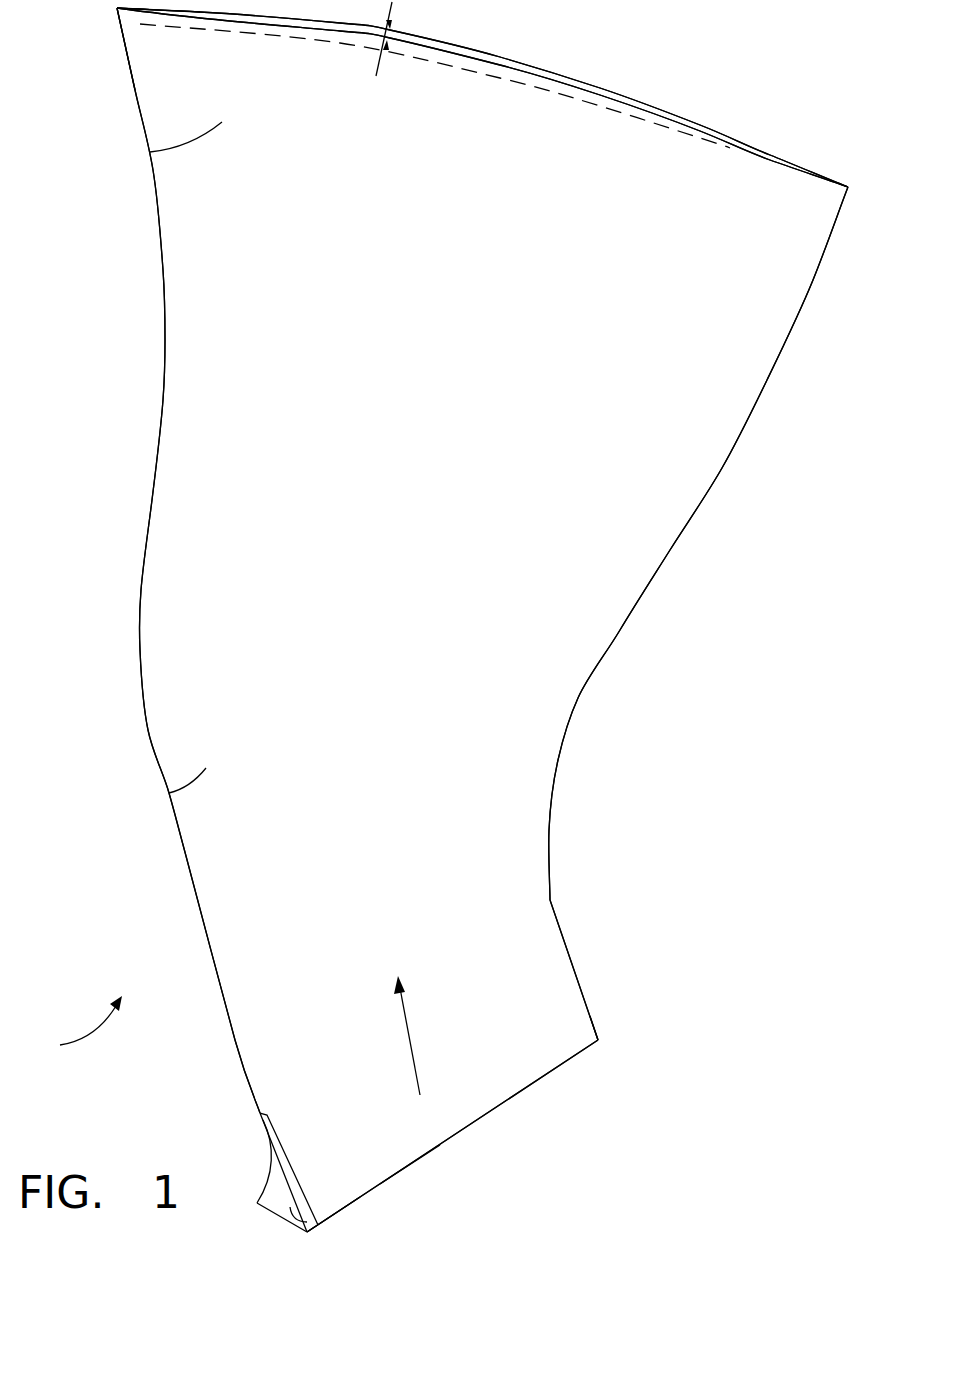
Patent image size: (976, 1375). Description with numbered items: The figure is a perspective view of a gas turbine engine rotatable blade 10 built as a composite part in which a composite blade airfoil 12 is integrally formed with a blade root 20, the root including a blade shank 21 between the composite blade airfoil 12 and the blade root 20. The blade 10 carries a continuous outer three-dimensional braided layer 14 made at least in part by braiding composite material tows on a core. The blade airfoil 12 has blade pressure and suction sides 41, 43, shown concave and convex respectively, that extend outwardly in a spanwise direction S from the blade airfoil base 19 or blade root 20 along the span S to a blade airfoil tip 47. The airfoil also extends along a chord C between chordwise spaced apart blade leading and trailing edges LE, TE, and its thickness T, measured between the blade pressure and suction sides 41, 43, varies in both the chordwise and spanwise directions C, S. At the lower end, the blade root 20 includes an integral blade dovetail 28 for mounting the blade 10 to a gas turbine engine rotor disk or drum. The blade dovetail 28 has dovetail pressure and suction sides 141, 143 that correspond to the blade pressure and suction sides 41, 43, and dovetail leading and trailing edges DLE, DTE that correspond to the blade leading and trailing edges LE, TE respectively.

The gas turbine engine rotatable blade 10 is at (73, 1030).
The composite blade airfoil 12 is at (622, 630).
The continuous outer three-dimensional braided layer 14 is at (169, 793).
The blade airfoil base 19 is at (575, 966).
The blade root 20 is at (255, 1203).
The blade shank 21 is at (257, 1125).
The blade dovetail 28 is at (385, 1158).
The blade pressure side 41 is at (150, 152).
The blade suction side 43 is at (510, 60).
The blade airfoil tip 47 is at (113, 10).
The dovetail pressure side 141 is at (493, 1100).
The dovetail suction side 143 is at (265, 1178).
The blade leading edge LE is at (163, 378).
The blade trailing edge TE is at (722, 468).
The dovetail leading edge DLE is at (310, 1227).
The dovetail trailing edge DTE is at (595, 1013).
The chord C is at (552, 98).
The thickness T is at (377, 66).
The span S is at (421, 1035).